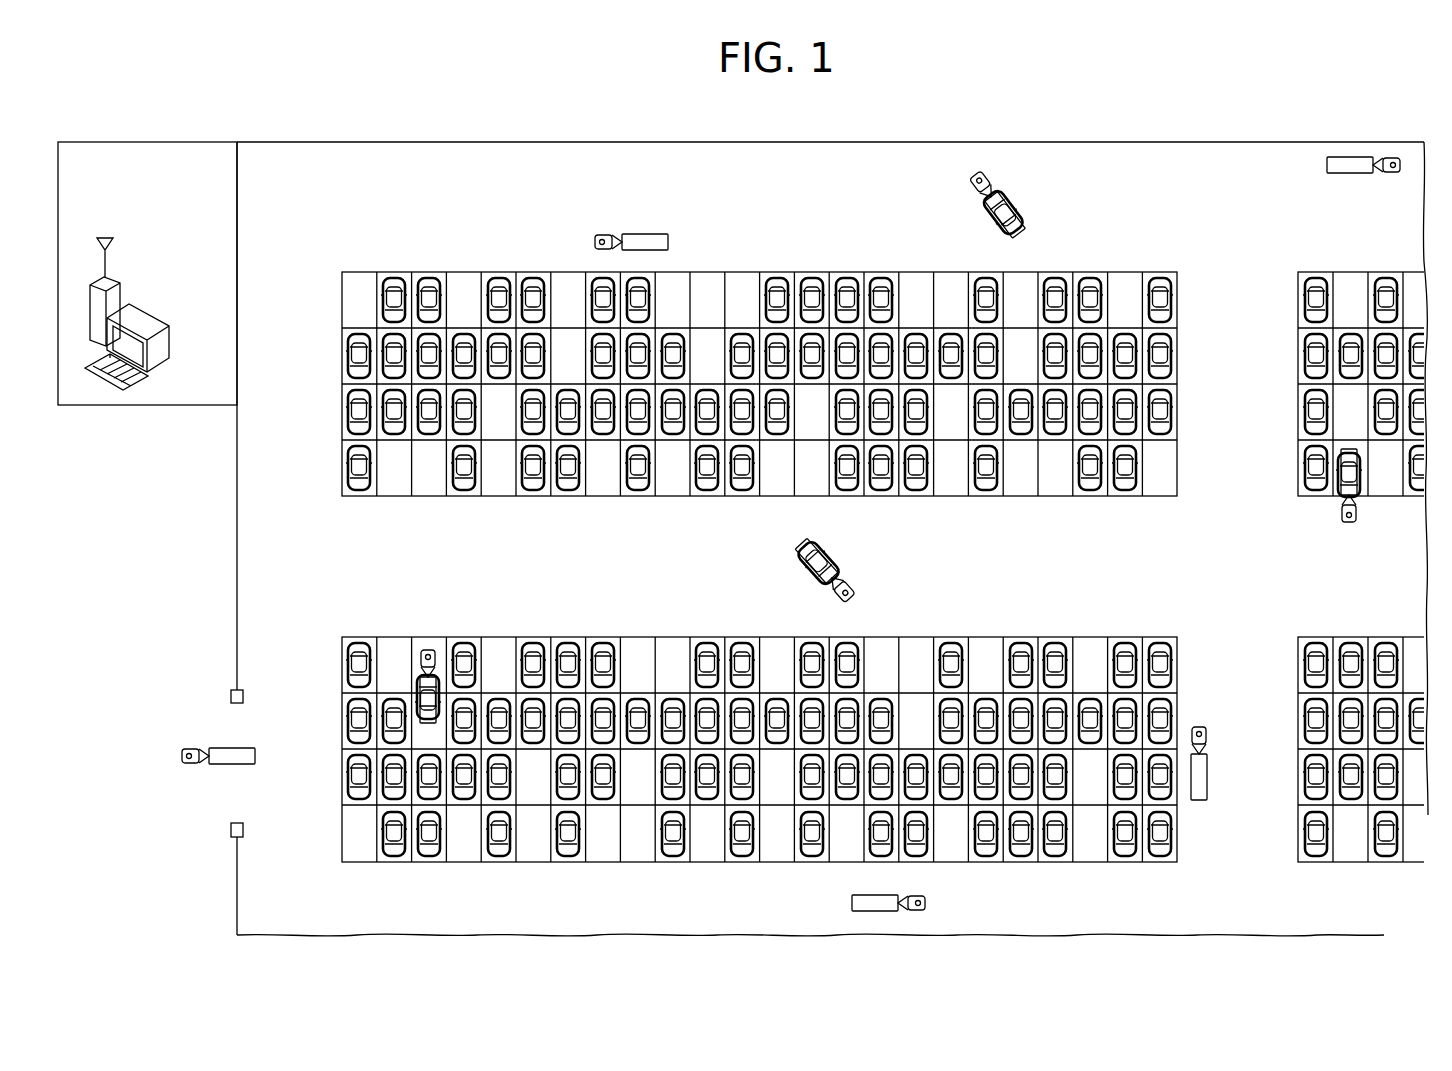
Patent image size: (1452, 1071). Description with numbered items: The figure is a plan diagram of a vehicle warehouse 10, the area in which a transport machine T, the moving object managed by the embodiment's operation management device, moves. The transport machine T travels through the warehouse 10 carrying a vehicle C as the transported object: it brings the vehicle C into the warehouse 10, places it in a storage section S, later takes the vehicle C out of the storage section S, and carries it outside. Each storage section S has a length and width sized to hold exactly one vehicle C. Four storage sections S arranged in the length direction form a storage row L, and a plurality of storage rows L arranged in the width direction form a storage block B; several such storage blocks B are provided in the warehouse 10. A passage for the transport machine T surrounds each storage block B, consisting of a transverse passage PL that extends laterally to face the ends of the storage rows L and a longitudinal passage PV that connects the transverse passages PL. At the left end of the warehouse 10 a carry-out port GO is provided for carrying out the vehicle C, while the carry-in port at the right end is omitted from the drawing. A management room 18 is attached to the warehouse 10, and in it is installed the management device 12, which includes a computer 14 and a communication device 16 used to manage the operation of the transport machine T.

The warehouse 10 is at (931, 120).
The management device 12 is at (148, 283).
The computer 14 is at (150, 318).
The communication device 16 is at (116, 277).
The management room 18 is at (132, 142).
The storage block B is at (742, 342).
The vehicle C is at (396, 278).
The transport machine T is at (644, 234).
The storage section S is at (342, 290).
The storage row L is at (348, 508).
The carry-out port GO is at (225, 713).
The transverse passage PL is at (735, 569).
The longitudinal passage PV is at (761, 612).